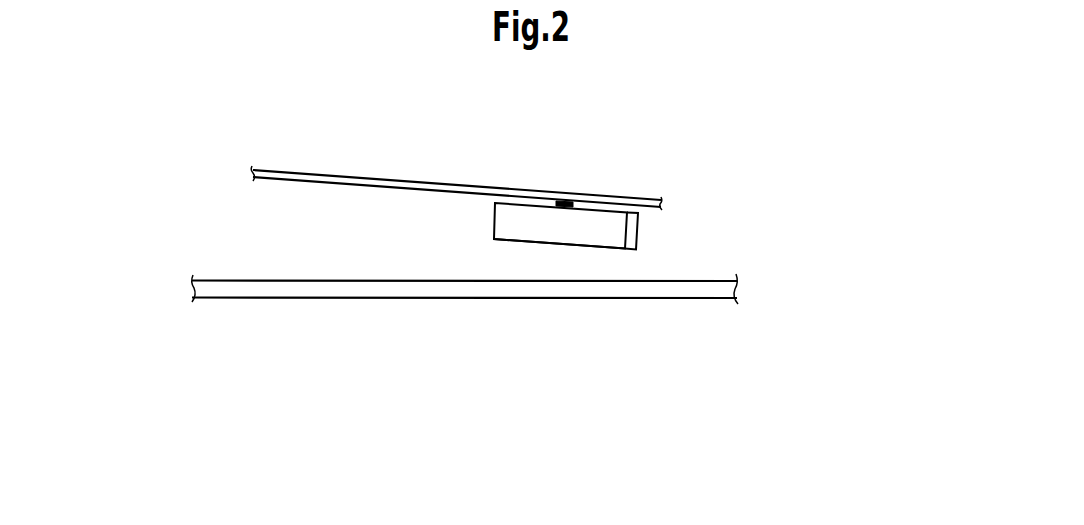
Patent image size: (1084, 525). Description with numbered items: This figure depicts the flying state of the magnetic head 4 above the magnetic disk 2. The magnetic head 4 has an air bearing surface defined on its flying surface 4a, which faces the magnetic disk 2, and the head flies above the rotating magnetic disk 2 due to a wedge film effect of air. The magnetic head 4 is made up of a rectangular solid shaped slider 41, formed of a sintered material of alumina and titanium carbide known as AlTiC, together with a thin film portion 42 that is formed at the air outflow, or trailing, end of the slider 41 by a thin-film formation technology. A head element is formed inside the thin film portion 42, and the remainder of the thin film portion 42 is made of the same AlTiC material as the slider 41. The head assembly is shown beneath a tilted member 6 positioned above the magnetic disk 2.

The magnetic disk 2 is at (260, 298).
The magnetic head 4 is at (567, 184).
The slider 41 is at (612, 217).
The thin film portion 42 is at (637, 230).
The flying surface 4a is at (509, 242).
The tilted strip 6 is at (365, 178).